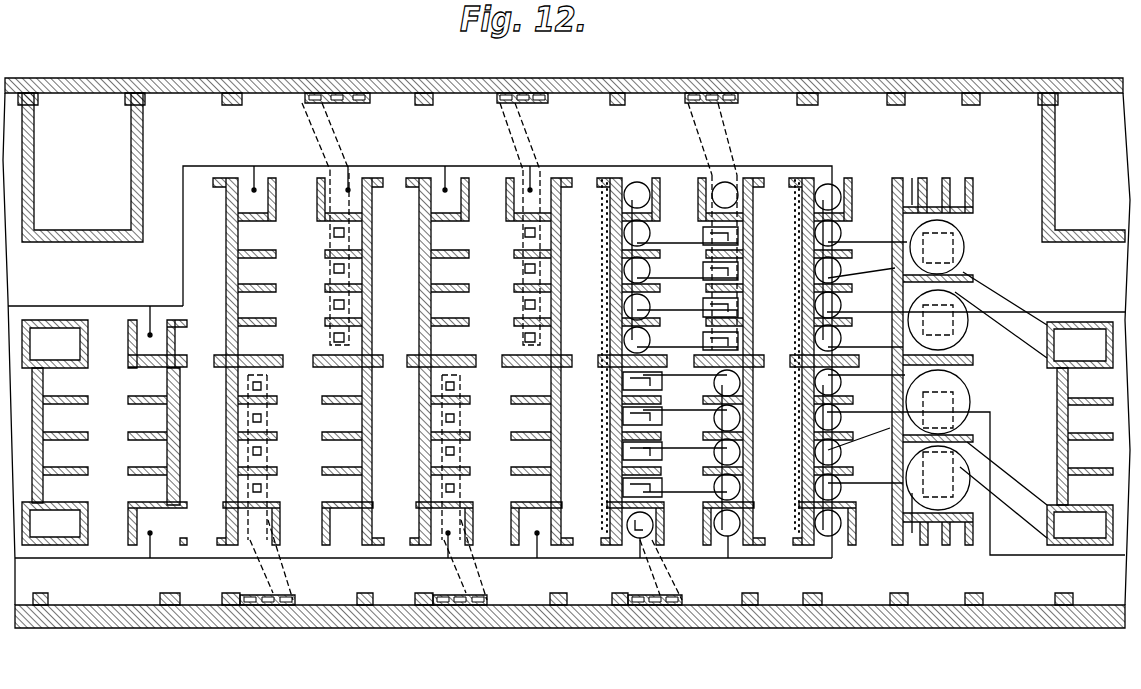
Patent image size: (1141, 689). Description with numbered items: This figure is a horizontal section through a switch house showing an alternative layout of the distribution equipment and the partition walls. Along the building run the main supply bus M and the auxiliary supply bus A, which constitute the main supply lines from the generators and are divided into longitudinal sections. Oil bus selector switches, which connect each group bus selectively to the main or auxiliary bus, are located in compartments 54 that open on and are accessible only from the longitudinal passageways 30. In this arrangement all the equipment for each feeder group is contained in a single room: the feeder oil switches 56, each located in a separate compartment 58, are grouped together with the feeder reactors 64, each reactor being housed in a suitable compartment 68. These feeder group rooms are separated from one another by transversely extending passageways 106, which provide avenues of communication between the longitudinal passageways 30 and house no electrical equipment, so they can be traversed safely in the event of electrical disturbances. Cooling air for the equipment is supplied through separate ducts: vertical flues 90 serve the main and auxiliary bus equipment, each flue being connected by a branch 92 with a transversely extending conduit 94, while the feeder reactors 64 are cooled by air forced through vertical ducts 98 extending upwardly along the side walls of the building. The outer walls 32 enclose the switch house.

The passageway 30 is at (565, 390).
The wall 32 is at (503, 62).
The compartment 54 is at (457, 195).
The feeder oil switch 56 is at (727, 452).
The compartment 58 is at (712, 395).
The feeder reactor 64 is at (663, 493).
The compartment 68 is at (272, 448).
The vertical flue 90 is at (1080, 433).
The branch 92 is at (1030, 345).
The transversely extending conduit 94 is at (972, 343).
The vertical duct 98 is at (345, 104).
The transversely extending passageway 106 is at (530, 362).
The auxiliary supply bus A is at (433, 165).
The main supply bus M is at (414, 561).